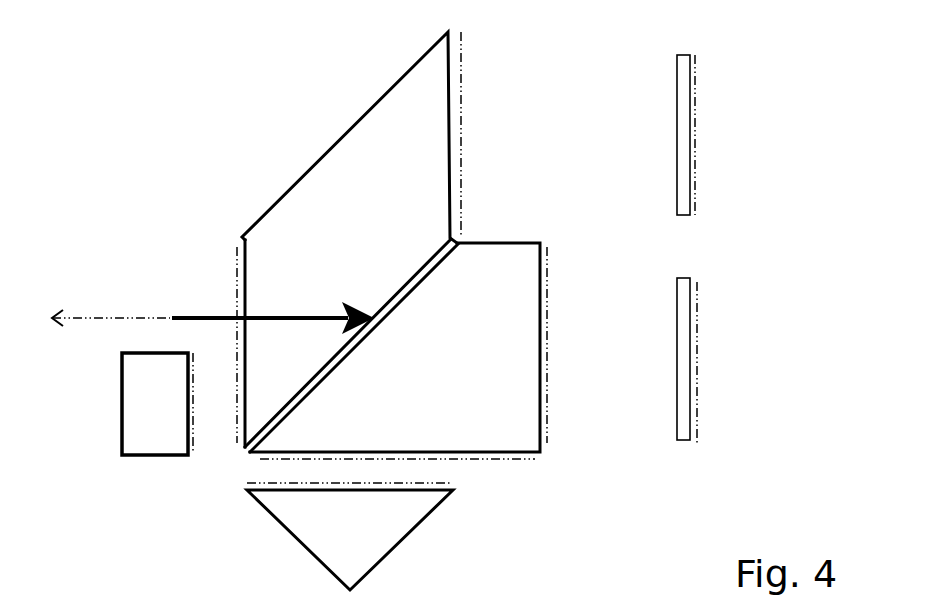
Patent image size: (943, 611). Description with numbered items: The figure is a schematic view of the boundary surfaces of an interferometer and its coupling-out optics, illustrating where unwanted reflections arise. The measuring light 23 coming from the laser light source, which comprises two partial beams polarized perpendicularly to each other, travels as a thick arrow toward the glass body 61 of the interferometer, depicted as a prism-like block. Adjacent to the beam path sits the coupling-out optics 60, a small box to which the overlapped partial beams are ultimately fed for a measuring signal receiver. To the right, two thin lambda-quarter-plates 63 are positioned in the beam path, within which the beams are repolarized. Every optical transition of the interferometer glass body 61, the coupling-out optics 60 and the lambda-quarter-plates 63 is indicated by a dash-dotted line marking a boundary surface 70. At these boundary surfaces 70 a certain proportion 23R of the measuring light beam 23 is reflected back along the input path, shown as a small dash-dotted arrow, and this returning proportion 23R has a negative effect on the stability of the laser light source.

The measuring light 23 is at (212, 317).
The reflected proportion of the measuring light beam 23R is at (88, 317).
The coupling-out optics 60 is at (135, 437).
The glass body 61 is at (322, 144).
The lambda-quarter-plates 63 is at (683, 83).
The boundary surfaces 70 is at (463, 103).